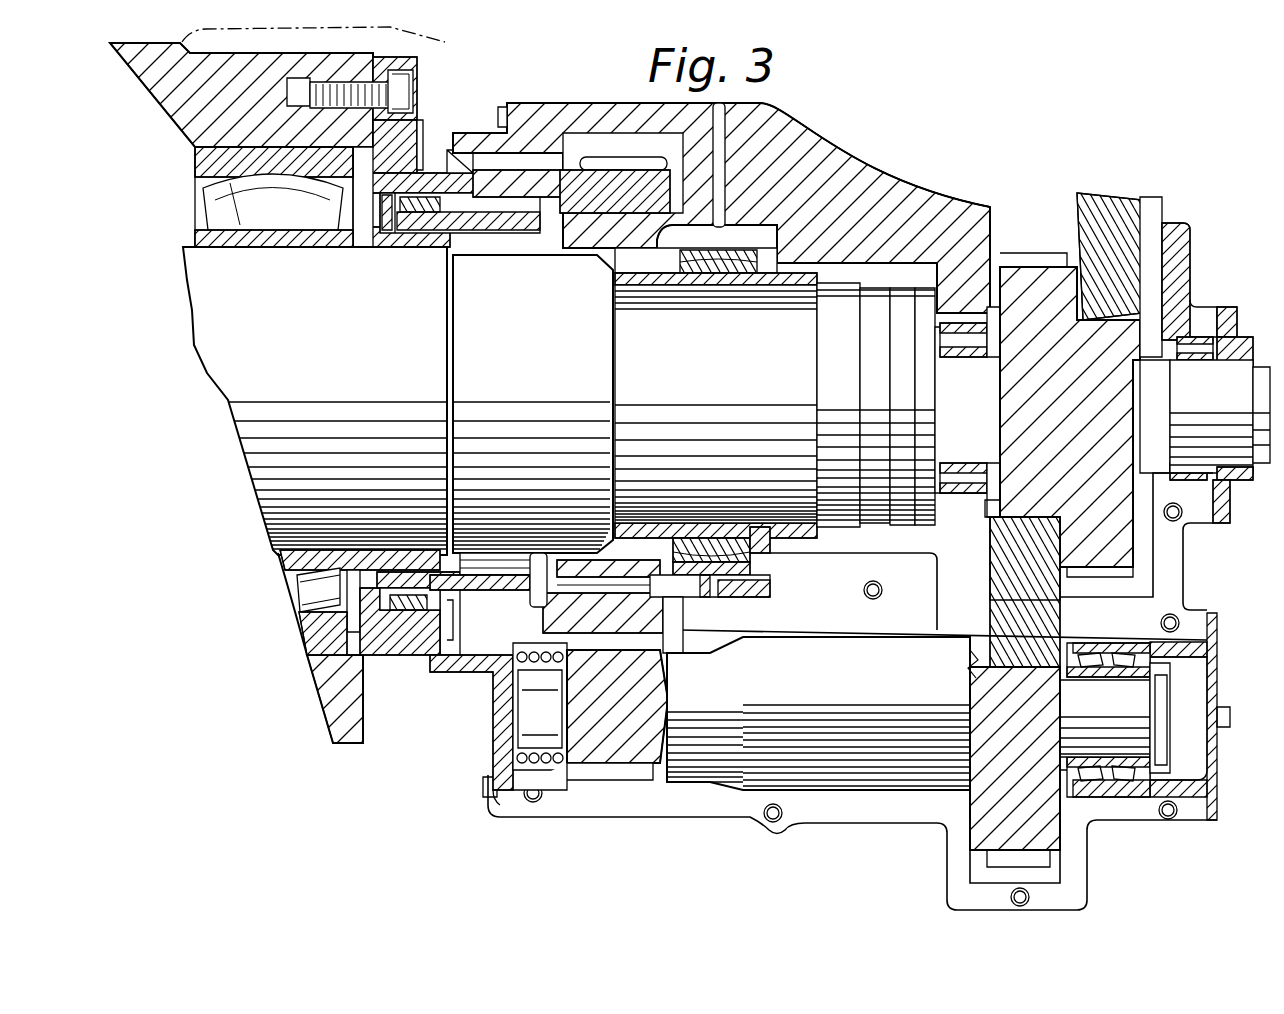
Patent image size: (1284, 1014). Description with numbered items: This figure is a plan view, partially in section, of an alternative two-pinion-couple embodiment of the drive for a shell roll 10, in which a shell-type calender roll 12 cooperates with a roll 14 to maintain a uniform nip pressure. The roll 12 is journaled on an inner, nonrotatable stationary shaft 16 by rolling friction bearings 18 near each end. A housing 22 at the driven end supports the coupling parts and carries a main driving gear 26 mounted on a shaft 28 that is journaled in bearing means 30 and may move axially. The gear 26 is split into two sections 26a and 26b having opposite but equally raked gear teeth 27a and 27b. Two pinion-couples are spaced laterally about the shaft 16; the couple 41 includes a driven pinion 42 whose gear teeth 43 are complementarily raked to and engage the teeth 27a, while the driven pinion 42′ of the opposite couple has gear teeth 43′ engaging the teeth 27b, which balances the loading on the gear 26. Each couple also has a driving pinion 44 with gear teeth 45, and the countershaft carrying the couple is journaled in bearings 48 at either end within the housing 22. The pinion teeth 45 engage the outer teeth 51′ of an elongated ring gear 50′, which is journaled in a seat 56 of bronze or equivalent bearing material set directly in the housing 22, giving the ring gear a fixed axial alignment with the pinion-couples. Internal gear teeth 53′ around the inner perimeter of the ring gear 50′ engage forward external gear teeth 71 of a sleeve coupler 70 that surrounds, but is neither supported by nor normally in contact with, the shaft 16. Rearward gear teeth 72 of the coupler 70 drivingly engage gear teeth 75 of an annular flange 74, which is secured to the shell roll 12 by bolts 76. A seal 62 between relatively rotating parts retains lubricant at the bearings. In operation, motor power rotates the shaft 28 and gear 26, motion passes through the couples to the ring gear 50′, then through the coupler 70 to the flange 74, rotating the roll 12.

The shell roll 10 is at (300, 722).
The shell-type calender roll 12 is at (175, 87).
The cooperating roll 14 is at (332, 44).
The stationary shaft 16 is at (326, 358).
The rolling friction bearings 18 is at (277, 208).
The housing 22 is at (867, 182).
The main driving gear 26 is at (1130, 537).
The gear section 26a is at (1013, 553).
The gear section 26b is at (1193, 300).
The gear teeth 27a is at (1007, 530).
The gear teeth 27b is at (1180, 252).
The shaft 28 is at (1262, 360).
The bearing means 30 is at (1198, 340).
The pinion-couple 41 is at (864, 698).
The driven pinion 42 is at (990, 837).
The driven pinion 42′ is at (1143, 205).
The gear teeth 43 is at (987, 600).
The gear teeth 43′ is at (1152, 228).
The driving pinion 44 is at (647, 752).
The gear teeth 45 is at (613, 778).
The bearings 48 is at (527, 752).
The ring gear 50′ is at (607, 183).
The teeth 51′ is at (630, 160).
The internal gear teeth 53′ is at (512, 200).
The seat 56 is at (778, 210).
The seal 62 is at (428, 160).
The sleeve coupler 70 is at (447, 222).
The forward external gear teeth 71 is at (540, 203).
The gear teeth 72 is at (413, 210).
The annular flange 74 is at (383, 730).
The gear teeth 75 is at (393, 202).
The bolts 76 is at (410, 94).